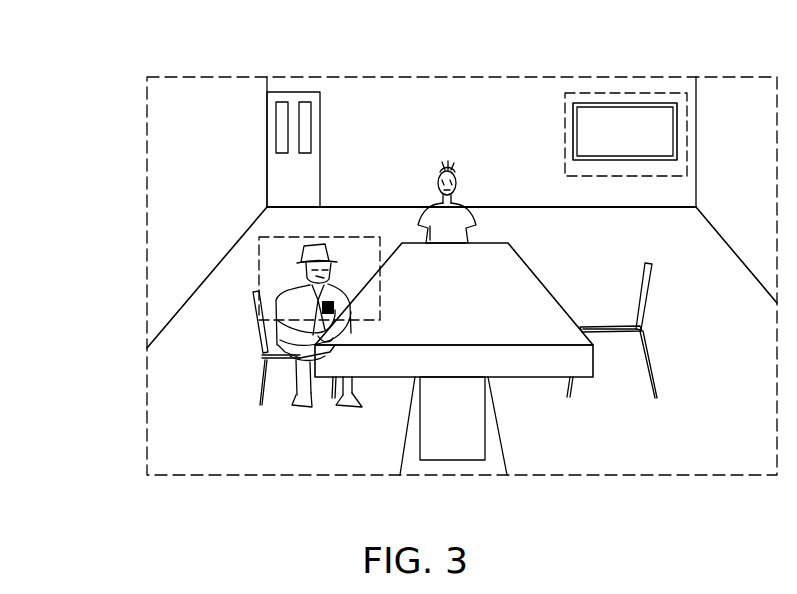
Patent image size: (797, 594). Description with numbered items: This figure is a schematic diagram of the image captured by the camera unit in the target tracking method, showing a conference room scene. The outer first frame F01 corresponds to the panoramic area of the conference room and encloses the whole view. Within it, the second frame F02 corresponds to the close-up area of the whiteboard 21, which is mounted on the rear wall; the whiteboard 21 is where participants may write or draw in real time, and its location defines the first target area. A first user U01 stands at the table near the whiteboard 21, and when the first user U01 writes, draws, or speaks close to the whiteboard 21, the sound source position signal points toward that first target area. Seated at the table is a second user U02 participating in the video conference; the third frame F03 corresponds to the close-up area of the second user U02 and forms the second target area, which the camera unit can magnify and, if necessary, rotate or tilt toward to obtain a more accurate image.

The first frame F01 is at (453, 77).
The second frame F02 is at (623, 93).
The third frame F03 is at (259, 272).
The whiteboard 21 is at (670, 123).
The first user U01 is at (442, 171).
The second user U02 is at (301, 248).